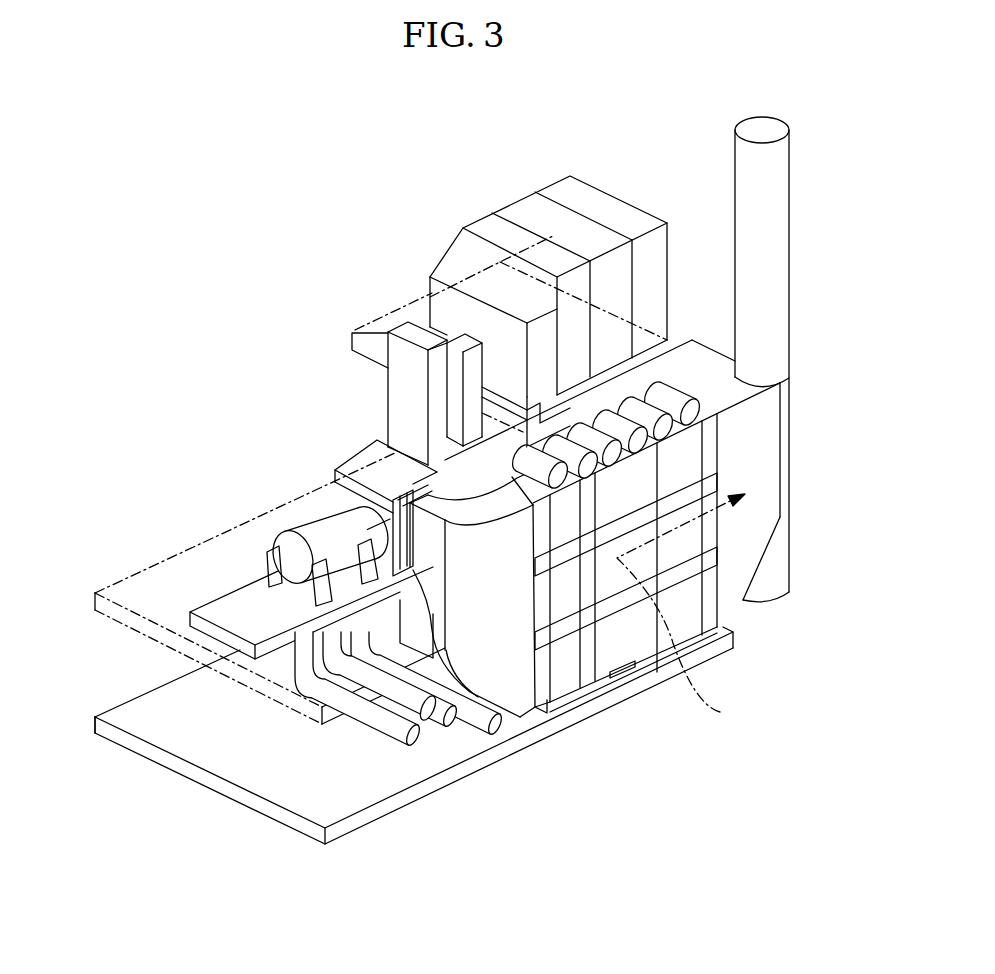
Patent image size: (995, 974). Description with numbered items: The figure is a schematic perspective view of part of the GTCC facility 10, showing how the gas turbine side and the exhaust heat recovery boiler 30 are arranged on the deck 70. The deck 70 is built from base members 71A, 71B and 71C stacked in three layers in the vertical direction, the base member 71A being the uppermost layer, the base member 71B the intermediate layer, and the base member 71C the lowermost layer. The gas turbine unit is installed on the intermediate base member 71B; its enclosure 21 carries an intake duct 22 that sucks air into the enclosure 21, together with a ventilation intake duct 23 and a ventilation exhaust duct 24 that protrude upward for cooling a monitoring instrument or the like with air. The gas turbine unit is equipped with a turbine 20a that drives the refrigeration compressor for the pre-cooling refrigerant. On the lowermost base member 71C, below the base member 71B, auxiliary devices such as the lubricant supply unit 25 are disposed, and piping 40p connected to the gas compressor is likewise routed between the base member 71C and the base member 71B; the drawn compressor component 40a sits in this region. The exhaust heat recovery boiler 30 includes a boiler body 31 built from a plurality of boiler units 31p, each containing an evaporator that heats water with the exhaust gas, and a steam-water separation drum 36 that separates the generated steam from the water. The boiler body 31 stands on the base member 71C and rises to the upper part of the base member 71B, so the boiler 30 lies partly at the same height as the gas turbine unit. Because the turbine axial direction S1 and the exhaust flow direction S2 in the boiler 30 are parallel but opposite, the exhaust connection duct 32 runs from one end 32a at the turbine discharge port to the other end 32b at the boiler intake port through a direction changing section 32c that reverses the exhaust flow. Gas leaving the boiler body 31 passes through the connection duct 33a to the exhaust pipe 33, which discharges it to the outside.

The GTCC facility 10 is at (277, 262).
The turbine 20a is at (373, 437).
The enclosure 21 is at (387, 458).
The intake duct 22 is at (552, 185).
The ventilation intake duct 23 is at (450, 336).
The ventilation exhaust duct 24 is at (405, 328).
The lubricant supply unit 25 is at (400, 622).
The exhaust heat recovery boiler 30 is at (675, 630).
The boiler body 31 is at (643, 650).
The boiler unit 31p is at (695, 452).
The exhaust connection duct 32 is at (527, 672).
The one end 32a is at (413, 518).
The other end 32b is at (556, 682).
The direction changing section 32c is at (482, 670).
The exhaust pipe 33 is at (788, 272).
The connection duct 33a is at (752, 595).
The steam-water separation drum 36 is at (522, 450).
The pump 40a is at (275, 542).
The piping 40p is at (428, 716).
The deck 70 is at (252, 823).
The base member 71A is at (365, 320).
The base member 71B is at (112, 590).
The base member 71C is at (88, 722).
The turbine axial direction S1 is at (288, 538).
The flow direction S2 is at (683, 614).